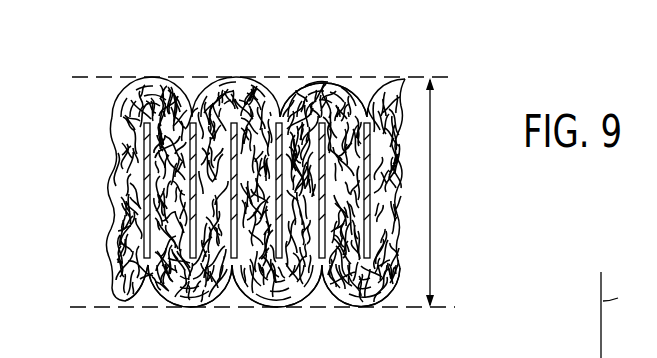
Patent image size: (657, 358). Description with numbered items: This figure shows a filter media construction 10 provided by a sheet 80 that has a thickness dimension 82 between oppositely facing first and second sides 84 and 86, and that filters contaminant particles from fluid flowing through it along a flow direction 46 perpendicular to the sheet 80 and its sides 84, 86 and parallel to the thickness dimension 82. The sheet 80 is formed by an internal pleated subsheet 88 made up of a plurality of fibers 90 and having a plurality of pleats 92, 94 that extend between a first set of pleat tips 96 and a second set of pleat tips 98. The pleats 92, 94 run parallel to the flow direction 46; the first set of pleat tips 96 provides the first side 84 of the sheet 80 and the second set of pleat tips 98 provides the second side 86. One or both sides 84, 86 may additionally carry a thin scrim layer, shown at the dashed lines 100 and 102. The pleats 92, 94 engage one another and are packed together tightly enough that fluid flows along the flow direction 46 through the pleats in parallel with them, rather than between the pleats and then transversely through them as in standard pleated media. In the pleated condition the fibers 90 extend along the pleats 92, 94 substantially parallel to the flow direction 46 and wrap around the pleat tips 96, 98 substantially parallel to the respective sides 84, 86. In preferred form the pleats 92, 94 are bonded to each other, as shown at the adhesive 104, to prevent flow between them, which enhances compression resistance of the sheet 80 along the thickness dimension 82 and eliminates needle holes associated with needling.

The fabric 10 is at (119, 75).
The flow direction 46 is at (290, 64).
The sheet 80 is at (456, 58).
The thickness dimension 82 is at (432, 119).
The first side 84 is at (397, 78).
The second side 86 is at (348, 308).
The internal pleated subsheet 88 is at (400, 130).
The fibers 90 is at (300, 252).
The pleat 92 is at (308, 110).
The pleat 94 is at (265, 130).
The first set of pleat tips 96 is at (343, 84).
The second set of pleat tips 98 is at (275, 292).
The scrim layer 100 is at (94, 78).
The scrim layer 102 is at (92, 307).
The adhesive 104 is at (268, 250).